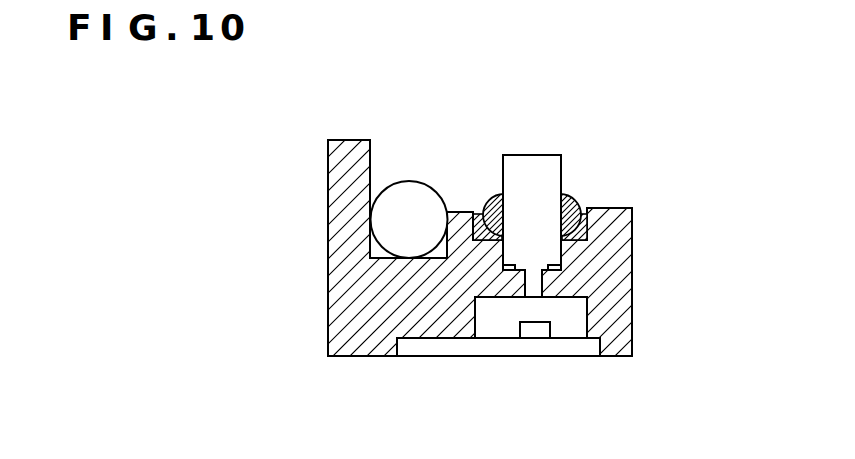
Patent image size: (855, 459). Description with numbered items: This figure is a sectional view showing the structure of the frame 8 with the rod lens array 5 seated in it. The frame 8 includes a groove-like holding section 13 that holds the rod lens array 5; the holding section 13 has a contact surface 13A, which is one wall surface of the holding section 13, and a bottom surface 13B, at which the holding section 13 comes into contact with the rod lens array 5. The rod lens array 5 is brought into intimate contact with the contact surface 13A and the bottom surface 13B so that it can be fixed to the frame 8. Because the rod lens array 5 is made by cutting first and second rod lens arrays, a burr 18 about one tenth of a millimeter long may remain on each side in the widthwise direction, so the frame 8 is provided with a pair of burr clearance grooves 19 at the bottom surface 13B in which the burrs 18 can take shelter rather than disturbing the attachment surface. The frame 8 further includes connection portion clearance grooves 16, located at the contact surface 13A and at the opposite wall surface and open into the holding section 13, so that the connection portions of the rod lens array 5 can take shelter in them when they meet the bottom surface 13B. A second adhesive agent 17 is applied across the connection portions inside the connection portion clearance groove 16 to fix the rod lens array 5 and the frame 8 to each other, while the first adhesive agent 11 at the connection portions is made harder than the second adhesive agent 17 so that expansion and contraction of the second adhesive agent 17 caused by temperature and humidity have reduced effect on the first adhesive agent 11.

The rod lens array 5 is at (538, 155).
The frame 8 is at (328, 250).
The first adhesive agent 11 is at (498, 192).
The holding section 13 is at (600, 236).
The contact surface 13A is at (470, 222).
The bottom surface 13B is at (585, 250).
The connection portion clearance groove 16 is at (486, 212).
The second adhesive agent 17 is at (482, 217).
The burr 18 is at (499, 272).
The burr clearance groove 19 is at (508, 275).